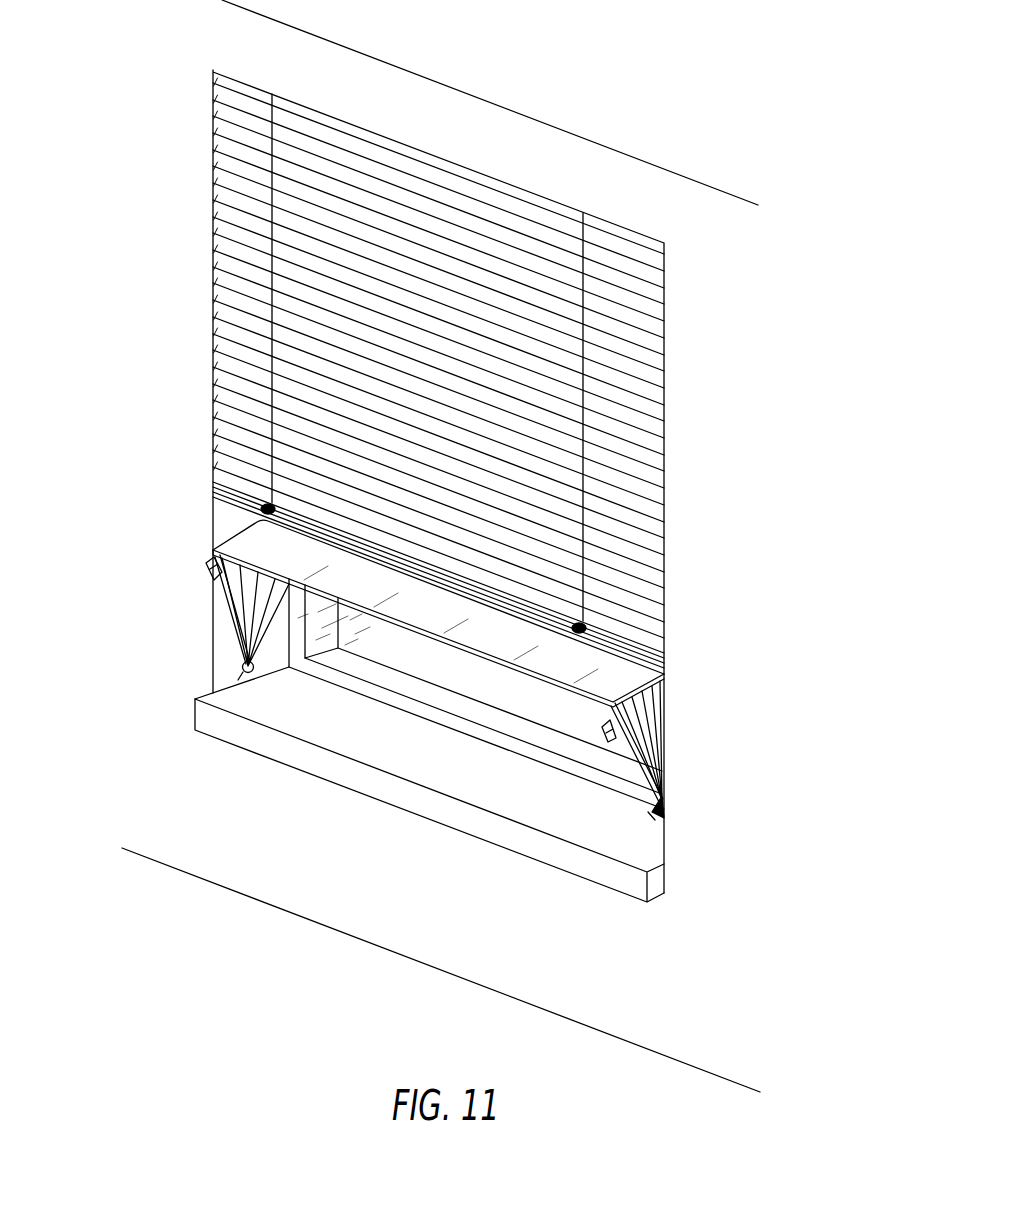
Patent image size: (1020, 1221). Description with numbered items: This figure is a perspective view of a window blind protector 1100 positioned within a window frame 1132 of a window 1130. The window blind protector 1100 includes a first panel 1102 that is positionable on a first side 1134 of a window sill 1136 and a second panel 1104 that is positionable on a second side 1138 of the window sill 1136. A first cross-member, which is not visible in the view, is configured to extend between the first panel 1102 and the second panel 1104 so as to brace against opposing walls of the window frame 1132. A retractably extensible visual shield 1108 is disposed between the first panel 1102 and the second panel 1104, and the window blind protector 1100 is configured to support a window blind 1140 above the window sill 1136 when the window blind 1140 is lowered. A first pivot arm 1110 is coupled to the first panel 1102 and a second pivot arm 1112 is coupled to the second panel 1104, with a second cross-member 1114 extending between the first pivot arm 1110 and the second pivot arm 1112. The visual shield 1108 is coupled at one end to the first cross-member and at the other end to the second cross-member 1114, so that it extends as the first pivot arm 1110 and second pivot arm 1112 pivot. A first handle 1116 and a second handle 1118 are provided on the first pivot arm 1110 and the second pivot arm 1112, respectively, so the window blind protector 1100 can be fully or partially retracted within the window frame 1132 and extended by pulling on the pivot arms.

The window blind protector 1100 is at (444, 681).
The first panel 1102 is at (213, 588).
The second panel 1104 is at (639, 753).
The retractably extensible visual shield 1108 is at (587, 674).
The first pivot arm 1110 is at (243, 672).
The second pivot arm 1112 is at (683, 827).
The second cross-member 1114 is at (431, 641).
The first handle 1116 is at (213, 572).
The second handle 1118 is at (606, 738).
The window 1130 is at (497, 381).
The window frame 1132 is at (215, 647).
The first side 1134 is at (223, 680).
The window sill 1136 is at (461, 788).
The second side 1138 is at (667, 860).
The window blind 1140 is at (740, 292).